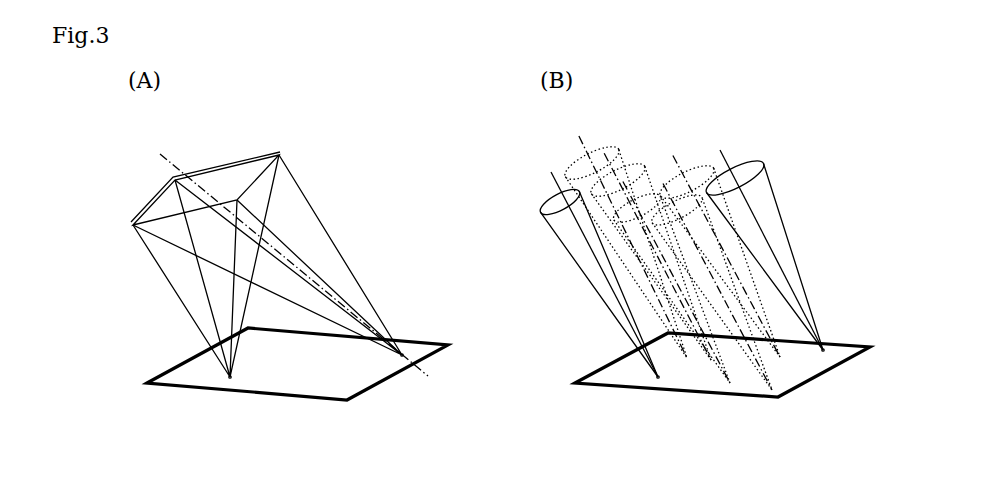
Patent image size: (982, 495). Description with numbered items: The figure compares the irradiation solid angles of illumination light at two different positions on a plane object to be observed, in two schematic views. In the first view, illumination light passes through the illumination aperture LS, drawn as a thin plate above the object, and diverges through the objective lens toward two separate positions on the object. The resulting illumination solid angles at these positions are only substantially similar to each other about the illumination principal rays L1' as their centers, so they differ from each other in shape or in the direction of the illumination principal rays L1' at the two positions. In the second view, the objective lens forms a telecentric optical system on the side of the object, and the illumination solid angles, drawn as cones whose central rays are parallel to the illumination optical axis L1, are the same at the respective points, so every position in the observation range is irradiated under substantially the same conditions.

The illumination aperture LS is at (162, 203).
The illumination principal ray L1' is at (294, 238).
The illumination optical axis L1 is at (777, 228).